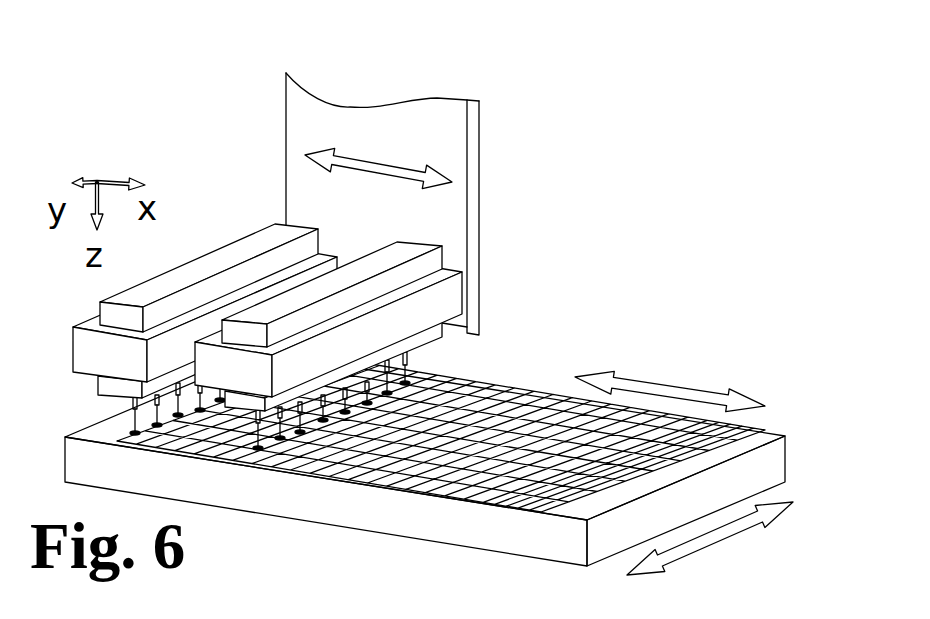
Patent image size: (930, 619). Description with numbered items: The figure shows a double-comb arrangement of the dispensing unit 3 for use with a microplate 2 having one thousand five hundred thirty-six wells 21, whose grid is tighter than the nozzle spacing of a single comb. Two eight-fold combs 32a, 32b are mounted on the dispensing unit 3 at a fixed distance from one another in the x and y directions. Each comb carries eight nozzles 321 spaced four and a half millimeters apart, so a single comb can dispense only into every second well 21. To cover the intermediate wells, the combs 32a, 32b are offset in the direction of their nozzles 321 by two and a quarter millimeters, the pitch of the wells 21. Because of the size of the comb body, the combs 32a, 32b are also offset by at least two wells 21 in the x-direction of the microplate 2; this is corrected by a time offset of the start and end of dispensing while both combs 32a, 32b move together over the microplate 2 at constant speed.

The microplate 2 is at (429, 388).
The wells 21 is at (372, 388).
The dispensing unit 3 is at (477, 190).
The first comb 32a is at (267, 245).
The second comb 32b is at (431, 237).
The nozzles 321 is at (440, 330).